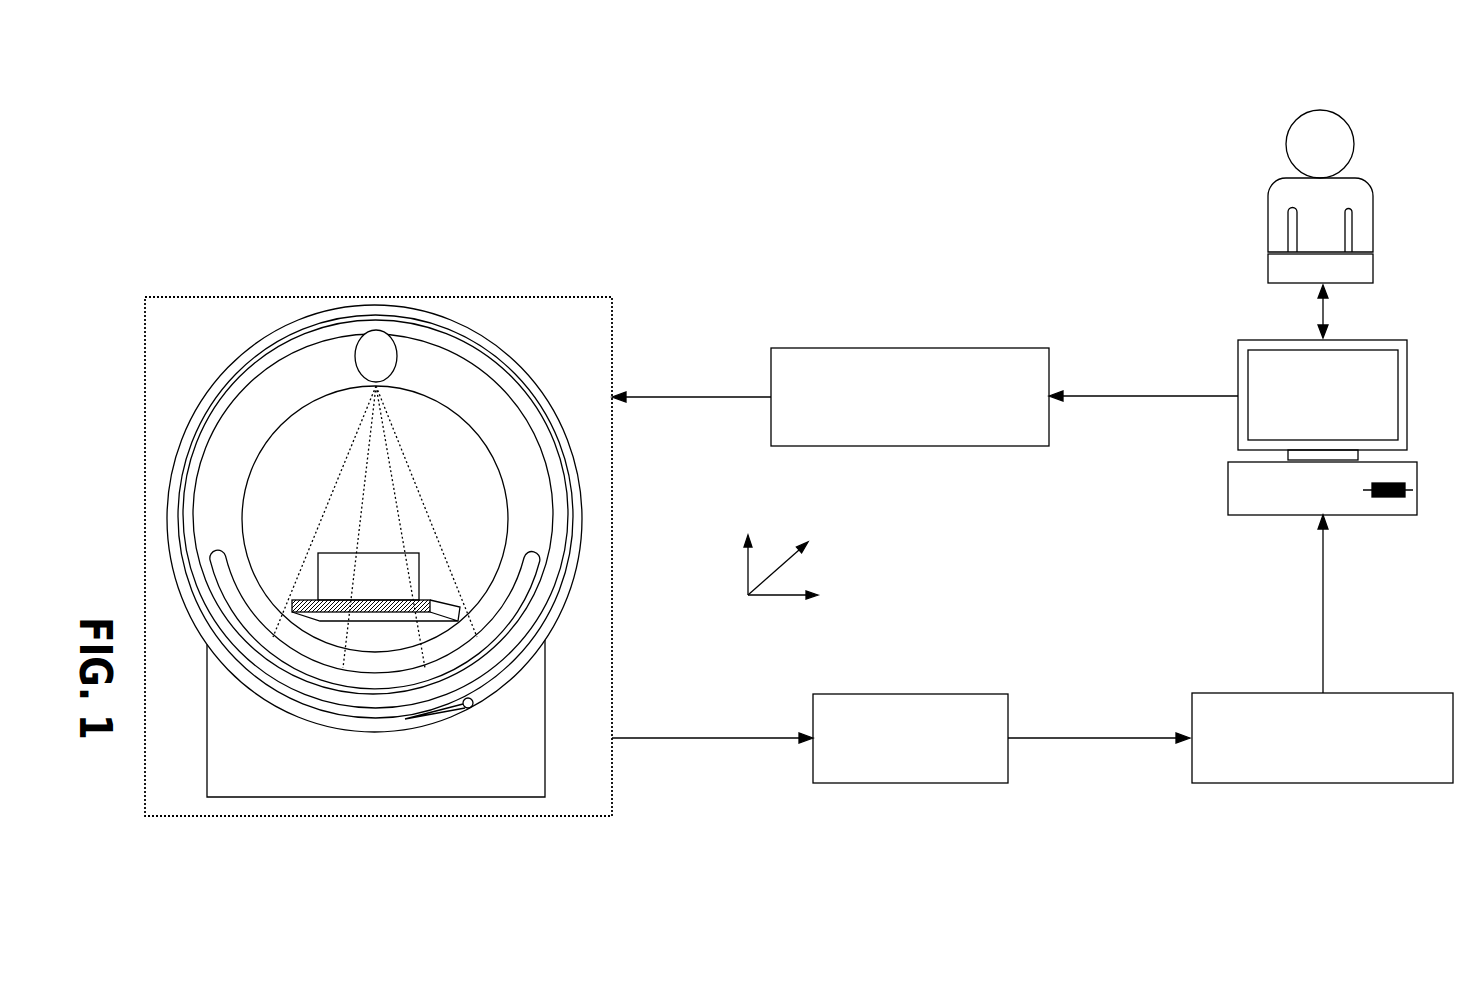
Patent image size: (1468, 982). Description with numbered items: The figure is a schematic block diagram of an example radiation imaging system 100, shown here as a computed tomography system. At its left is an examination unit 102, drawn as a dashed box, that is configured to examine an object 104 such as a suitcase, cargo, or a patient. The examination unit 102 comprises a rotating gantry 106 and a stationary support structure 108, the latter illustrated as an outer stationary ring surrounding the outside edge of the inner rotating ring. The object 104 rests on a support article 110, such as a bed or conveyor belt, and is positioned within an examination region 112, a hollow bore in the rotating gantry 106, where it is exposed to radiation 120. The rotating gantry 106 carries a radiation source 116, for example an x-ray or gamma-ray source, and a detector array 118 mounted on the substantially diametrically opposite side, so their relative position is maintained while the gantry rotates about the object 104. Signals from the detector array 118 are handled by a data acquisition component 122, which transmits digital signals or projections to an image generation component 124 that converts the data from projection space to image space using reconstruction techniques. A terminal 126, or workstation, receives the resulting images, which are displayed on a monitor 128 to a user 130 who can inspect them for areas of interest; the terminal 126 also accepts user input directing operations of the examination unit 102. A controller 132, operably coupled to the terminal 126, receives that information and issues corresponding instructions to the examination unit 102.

The radiation imaging system 100 is at (282, 170).
The examination unit 102 is at (600, 297).
The object 104 is at (332, 553).
The rotating gantry 106 is at (564, 442).
The support structure 108 is at (587, 467).
The support article 110 is at (312, 598).
The examination region 112 is at (309, 427).
The radiation source 116 is at (383, 347).
The detector array 118 is at (313, 683).
The radiation 120 is at (338, 475).
The data acquisition component 122 is at (813, 694).
The image generation component 124 is at (1192, 693).
The terminal 126 is at (1228, 490).
The monitor 128 is at (1238, 343).
The user 130 is at (1268, 190).
The controller 132 is at (770, 348).